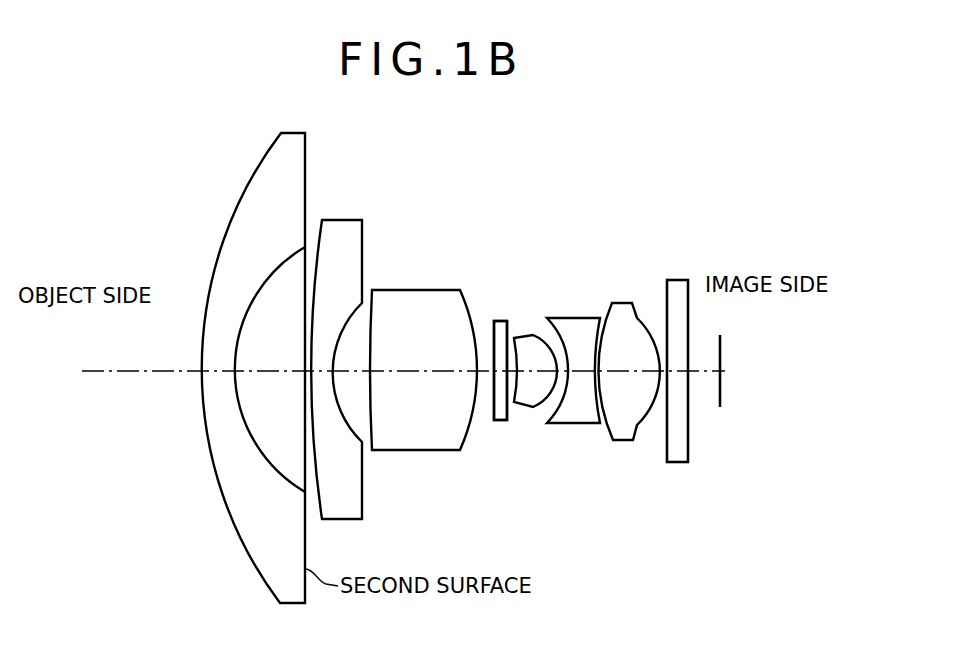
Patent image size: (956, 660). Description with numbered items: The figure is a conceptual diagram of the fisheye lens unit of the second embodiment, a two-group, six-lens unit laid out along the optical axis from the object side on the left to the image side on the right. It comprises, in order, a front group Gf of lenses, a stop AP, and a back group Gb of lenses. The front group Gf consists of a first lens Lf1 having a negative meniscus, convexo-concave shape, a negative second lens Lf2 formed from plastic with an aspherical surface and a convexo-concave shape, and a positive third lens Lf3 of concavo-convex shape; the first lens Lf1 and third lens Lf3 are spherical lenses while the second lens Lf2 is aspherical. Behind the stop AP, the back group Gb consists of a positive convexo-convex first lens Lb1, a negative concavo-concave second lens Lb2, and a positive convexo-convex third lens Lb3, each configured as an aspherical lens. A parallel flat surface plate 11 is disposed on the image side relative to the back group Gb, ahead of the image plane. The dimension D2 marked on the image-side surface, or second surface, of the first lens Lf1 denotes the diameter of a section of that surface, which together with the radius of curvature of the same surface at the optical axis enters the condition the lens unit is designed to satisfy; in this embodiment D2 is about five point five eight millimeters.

The first lens of the front group Lf1 is at (238, 207).
The second lens of the front group Lf2 is at (342, 220).
The third lens of the front group Lf3 is at (422, 290).
The front group Gf is at (522, 254).
The diameter of the second surface D2 is at (305, 492).
The stop AP is at (500, 420).
The first lens of the back group Lb1 is at (523, 407).
The second lens of the back group Lb2 is at (565, 423).
The third lens of the back group Lb3 is at (618, 440).
The back group Gb is at (647, 503).
The parallel flat surface plate 11 is at (680, 279).